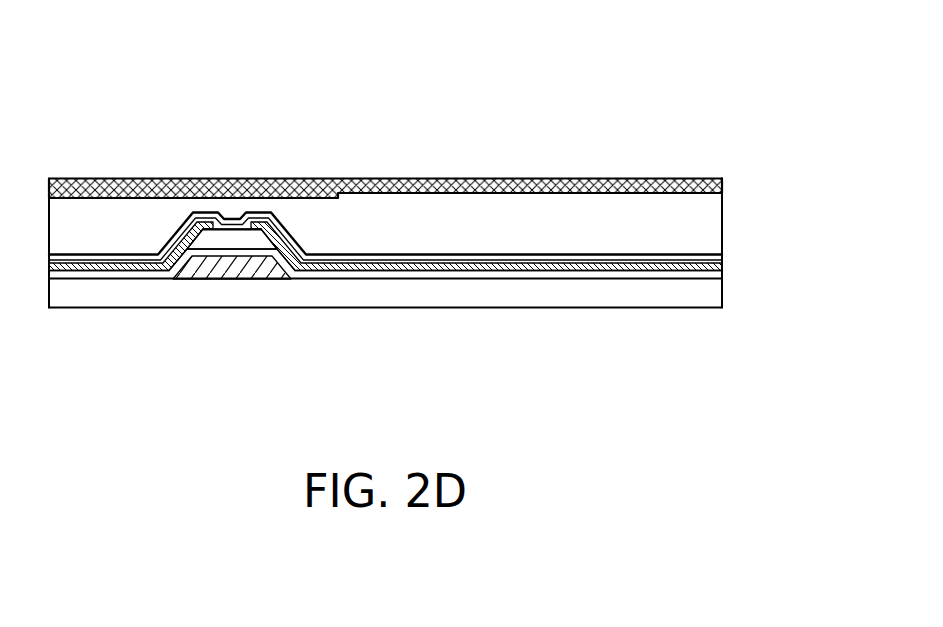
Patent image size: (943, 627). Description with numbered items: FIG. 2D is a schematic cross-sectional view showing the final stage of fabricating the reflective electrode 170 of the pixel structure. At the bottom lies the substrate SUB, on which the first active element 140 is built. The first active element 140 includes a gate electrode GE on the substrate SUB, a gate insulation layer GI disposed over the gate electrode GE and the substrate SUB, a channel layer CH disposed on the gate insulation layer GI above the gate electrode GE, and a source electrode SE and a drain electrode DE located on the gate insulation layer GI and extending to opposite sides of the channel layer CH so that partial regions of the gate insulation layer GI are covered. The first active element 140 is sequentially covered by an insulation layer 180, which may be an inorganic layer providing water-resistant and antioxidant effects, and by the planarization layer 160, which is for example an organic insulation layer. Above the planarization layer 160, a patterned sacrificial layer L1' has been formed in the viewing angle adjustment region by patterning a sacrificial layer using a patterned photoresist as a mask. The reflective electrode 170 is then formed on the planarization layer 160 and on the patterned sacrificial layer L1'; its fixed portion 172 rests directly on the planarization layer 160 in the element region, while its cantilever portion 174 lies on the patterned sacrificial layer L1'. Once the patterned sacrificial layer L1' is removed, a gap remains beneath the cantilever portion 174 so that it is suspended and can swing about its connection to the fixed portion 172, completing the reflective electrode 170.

The reflective electrode 170 is at (413, 106).
The fixed portion 172 is at (322, 177).
The cantilever portion 174 is at (402, 177).
The patterned sacrificial layer L1' is at (741, 180).
The planarization layer 160 is at (703, 220).
The insulation layer 180 is at (705, 260).
The substrate SUB is at (703, 293).
The first active element 140 is at (385, 324).
The source electrode SE is at (136, 268).
The gate electrode GE is at (210, 265).
The channel layer CH is at (233, 240).
The drain electrode DE is at (486, 298).
The gate insulation layer GI is at (353, 277).